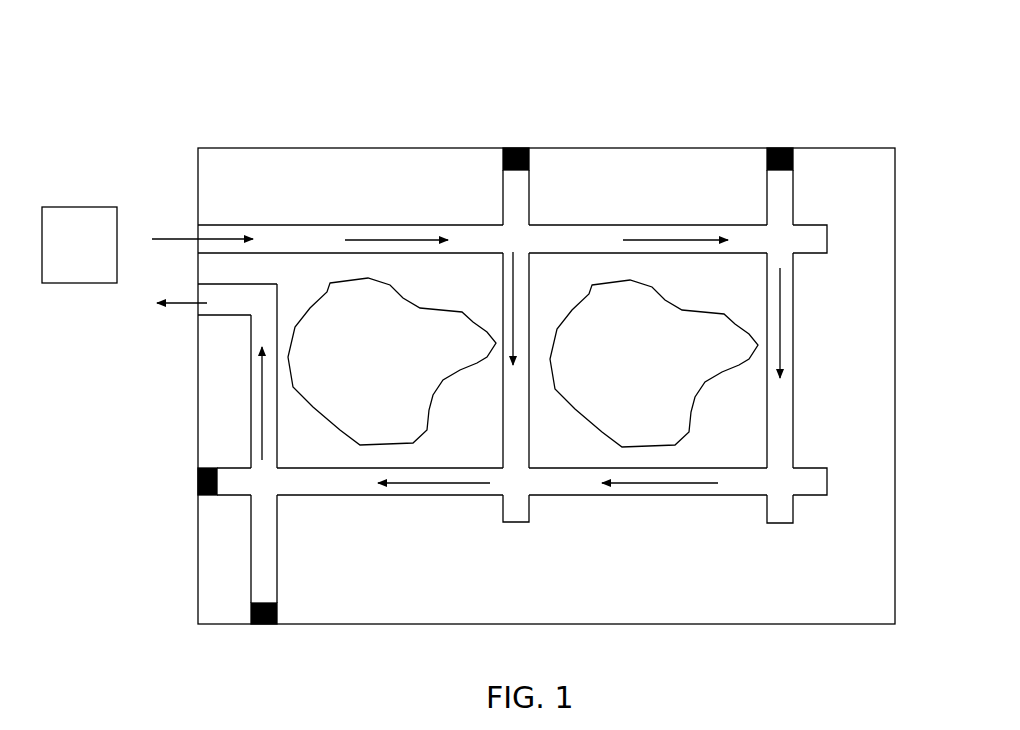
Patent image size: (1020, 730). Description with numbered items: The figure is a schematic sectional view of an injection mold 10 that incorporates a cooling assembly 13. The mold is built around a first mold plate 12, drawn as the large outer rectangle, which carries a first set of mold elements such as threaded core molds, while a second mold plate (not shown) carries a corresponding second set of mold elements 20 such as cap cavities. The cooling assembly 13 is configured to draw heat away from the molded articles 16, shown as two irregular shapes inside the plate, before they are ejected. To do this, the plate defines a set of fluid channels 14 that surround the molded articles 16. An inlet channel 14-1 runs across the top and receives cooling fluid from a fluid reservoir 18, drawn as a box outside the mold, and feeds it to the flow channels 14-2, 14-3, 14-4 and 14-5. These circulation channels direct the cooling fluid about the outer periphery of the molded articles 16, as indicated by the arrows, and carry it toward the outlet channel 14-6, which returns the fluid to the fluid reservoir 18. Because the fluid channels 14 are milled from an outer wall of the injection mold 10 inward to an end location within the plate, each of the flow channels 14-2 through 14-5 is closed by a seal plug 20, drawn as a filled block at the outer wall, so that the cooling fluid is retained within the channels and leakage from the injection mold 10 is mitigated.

The injection mold 10 is at (778, 68).
The first mold plate 12 is at (895, 225).
The cooling assembly 13 is at (605, 90).
The set of fluid channels 14 is at (640, 178).
The inlet channel 14-1 is at (330, 225).
The flow channel 14-2 is at (530, 197).
The flow channel 14-3 is at (793, 340).
The flow channel 14-4 is at (436, 497).
The flow channel 14-5 is at (250, 345).
The outlet channel 14-6 is at (213, 318).
The molded articles 16 is at (376, 365).
The fluid reservoir 18 is at (90, 259).
The seal plugs 20 is at (517, 140).